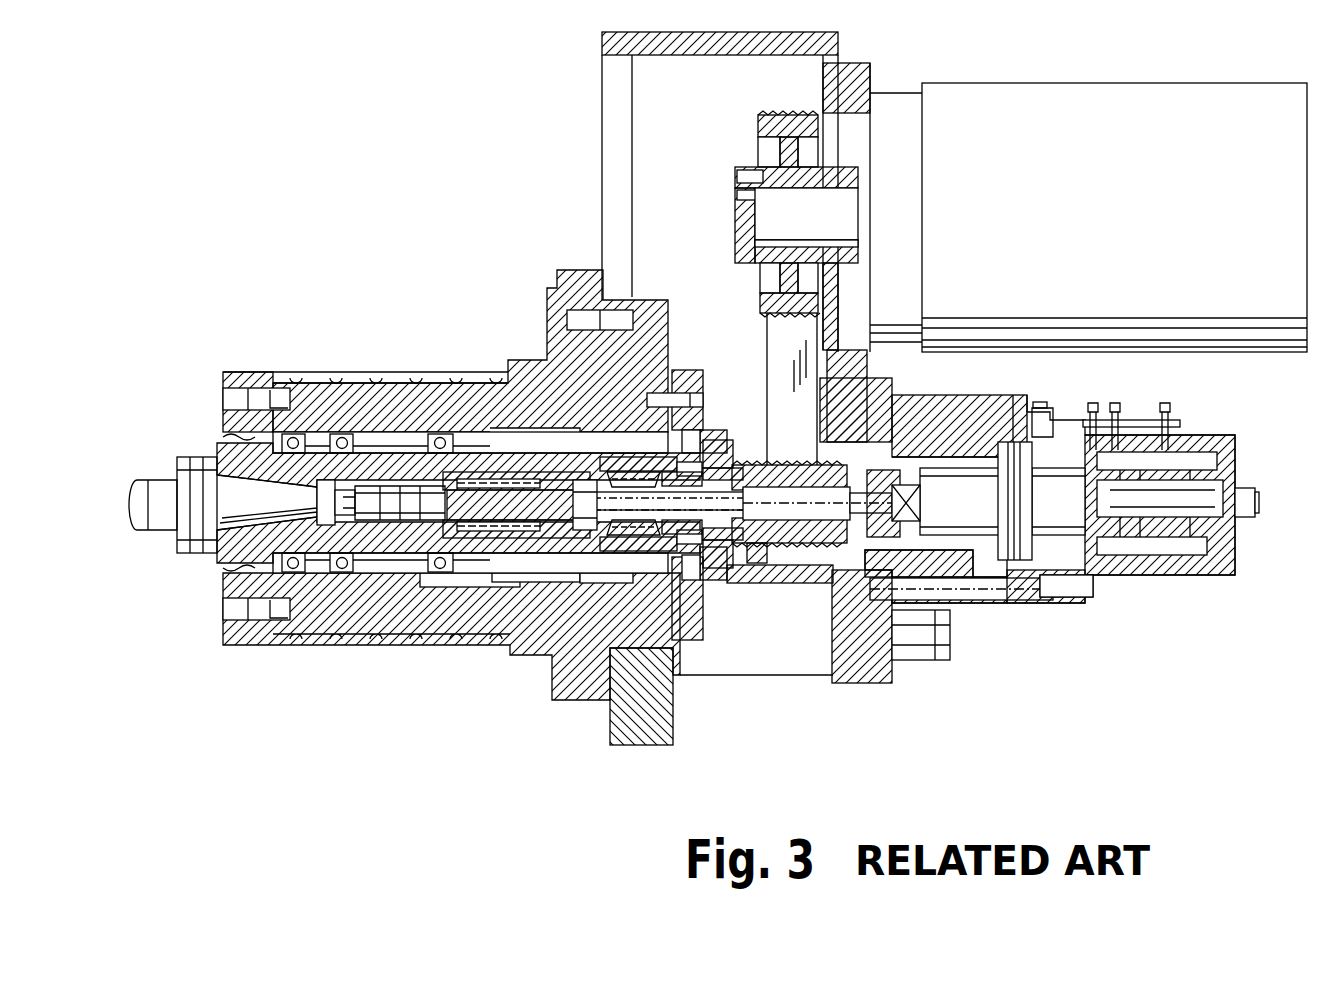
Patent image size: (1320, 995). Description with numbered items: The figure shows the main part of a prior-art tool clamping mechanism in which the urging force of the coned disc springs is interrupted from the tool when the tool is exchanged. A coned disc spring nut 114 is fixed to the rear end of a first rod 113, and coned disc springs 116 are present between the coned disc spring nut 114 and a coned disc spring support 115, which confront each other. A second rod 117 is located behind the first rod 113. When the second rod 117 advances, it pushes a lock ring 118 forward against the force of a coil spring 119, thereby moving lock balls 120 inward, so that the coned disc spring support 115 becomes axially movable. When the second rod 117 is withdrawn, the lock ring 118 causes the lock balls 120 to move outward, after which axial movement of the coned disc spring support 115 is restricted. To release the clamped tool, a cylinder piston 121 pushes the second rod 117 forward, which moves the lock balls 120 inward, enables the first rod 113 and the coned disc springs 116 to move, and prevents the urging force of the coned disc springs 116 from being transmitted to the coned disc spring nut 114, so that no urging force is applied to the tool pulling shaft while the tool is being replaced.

The first rod 113 is at (472, 504).
The coned disc spring nut 114 is at (690, 570).
The coned disc spring support 115 is at (618, 540).
The coned disc springs 116 is at (665, 540).
The second rod 117 is at (795, 505).
The lock ring 118 is at (520, 525).
The coil spring 119 is at (482, 476).
The lock balls 120 is at (580, 525).
The cylinder piston 121 is at (992, 552).